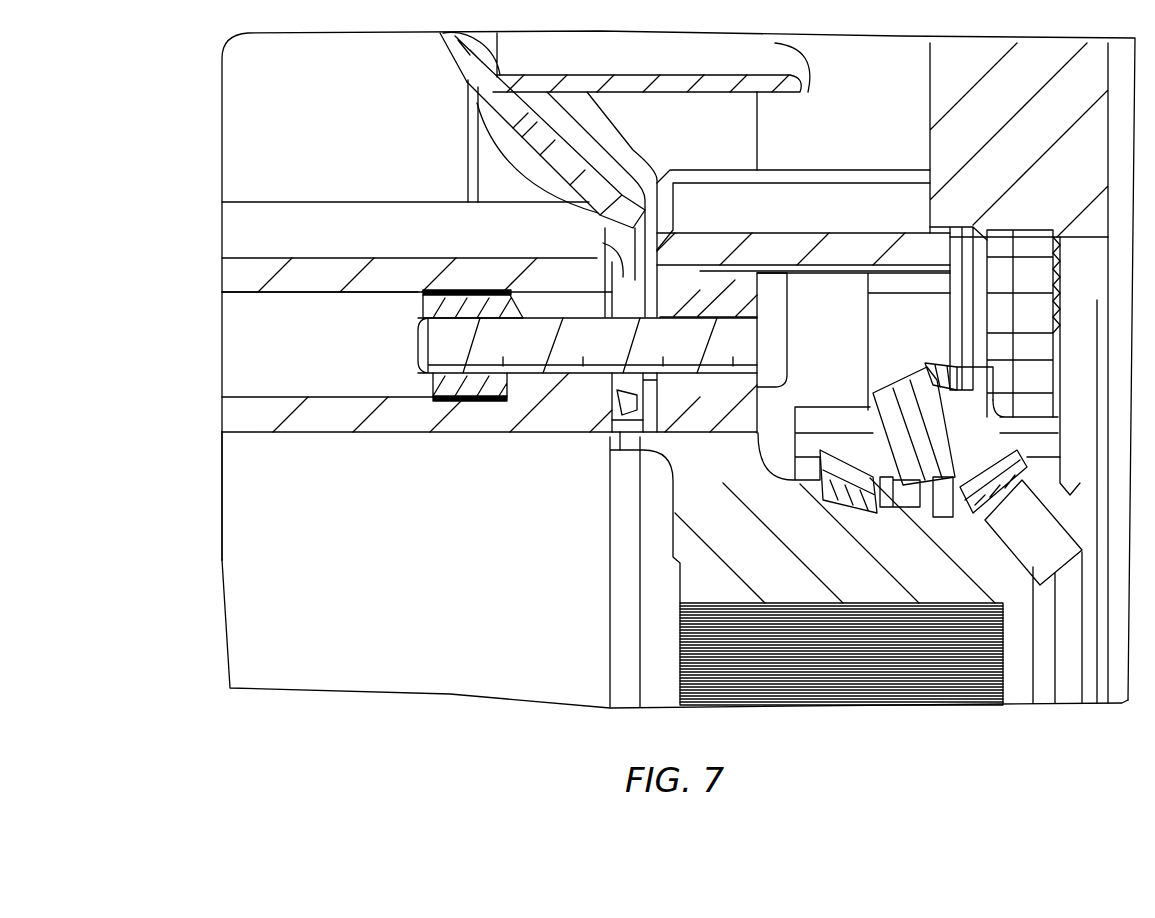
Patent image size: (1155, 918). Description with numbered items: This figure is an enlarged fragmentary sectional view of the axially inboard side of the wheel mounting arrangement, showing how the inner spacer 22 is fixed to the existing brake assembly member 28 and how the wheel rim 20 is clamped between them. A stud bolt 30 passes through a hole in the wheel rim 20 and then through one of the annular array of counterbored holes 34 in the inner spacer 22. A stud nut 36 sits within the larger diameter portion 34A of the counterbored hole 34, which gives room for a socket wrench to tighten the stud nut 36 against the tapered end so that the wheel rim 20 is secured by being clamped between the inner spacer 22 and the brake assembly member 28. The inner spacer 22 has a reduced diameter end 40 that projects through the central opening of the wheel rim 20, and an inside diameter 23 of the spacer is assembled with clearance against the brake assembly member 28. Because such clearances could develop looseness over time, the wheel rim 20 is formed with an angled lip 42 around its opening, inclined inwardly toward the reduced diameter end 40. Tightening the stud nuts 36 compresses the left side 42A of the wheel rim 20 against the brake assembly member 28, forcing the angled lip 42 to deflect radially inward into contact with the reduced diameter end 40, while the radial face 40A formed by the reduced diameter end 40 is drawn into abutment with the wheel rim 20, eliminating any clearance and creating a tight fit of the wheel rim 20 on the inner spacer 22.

The wheel rim 20 is at (447, 60).
The inner spacer 22 is at (272, 195).
The inside diameter 23 is at (260, 437).
The brake assembly member 28 is at (677, 420).
The stud bolts 30 is at (567, 332).
The counterbored holes 34 is at (228, 315).
The larger diameter portion of counterbored holes 34A is at (345, 345).
The stud nuts 36 is at (440, 308).
The reduced diameter end 40 is at (630, 425).
The radial face 40A is at (601, 256).
The angled lip 42 is at (617, 407).
The left side of the wheel rim 42A is at (600, 393).